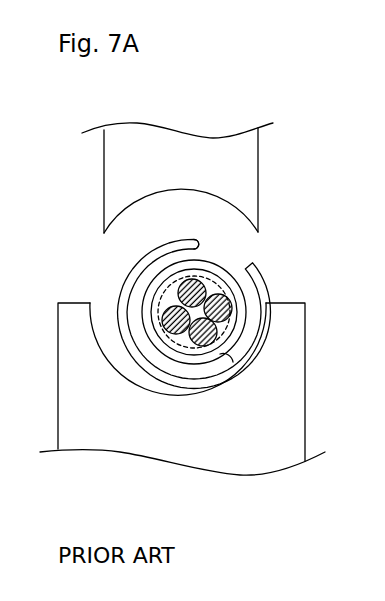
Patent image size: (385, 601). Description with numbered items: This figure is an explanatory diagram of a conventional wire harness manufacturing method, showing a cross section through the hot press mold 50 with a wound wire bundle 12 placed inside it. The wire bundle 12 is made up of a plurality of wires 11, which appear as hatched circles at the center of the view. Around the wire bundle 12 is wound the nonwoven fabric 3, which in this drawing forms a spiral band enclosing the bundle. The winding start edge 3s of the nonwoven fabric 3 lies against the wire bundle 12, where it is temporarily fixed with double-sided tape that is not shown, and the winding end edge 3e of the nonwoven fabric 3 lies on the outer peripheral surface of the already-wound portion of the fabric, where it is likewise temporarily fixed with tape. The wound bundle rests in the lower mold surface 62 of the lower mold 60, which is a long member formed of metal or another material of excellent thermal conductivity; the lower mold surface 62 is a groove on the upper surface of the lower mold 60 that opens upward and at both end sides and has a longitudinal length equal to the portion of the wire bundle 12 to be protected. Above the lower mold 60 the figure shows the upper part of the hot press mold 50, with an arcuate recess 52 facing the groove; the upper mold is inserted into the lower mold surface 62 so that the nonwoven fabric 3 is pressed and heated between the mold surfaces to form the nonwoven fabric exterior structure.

The hot press mold 50 is at (258, 162).
The recess of upper jig 52 is at (126, 216).
The lower mold 60 is at (287, 397).
The lower mold surface 62 is at (268, 318).
The nonwoven fabric 3 is at (118, 297).
The winding end edge 3e is at (200, 243).
The winding start edge 3s is at (233, 362).
The wires 11 is at (209, 273).
The wire bundle 12 is at (224, 284).